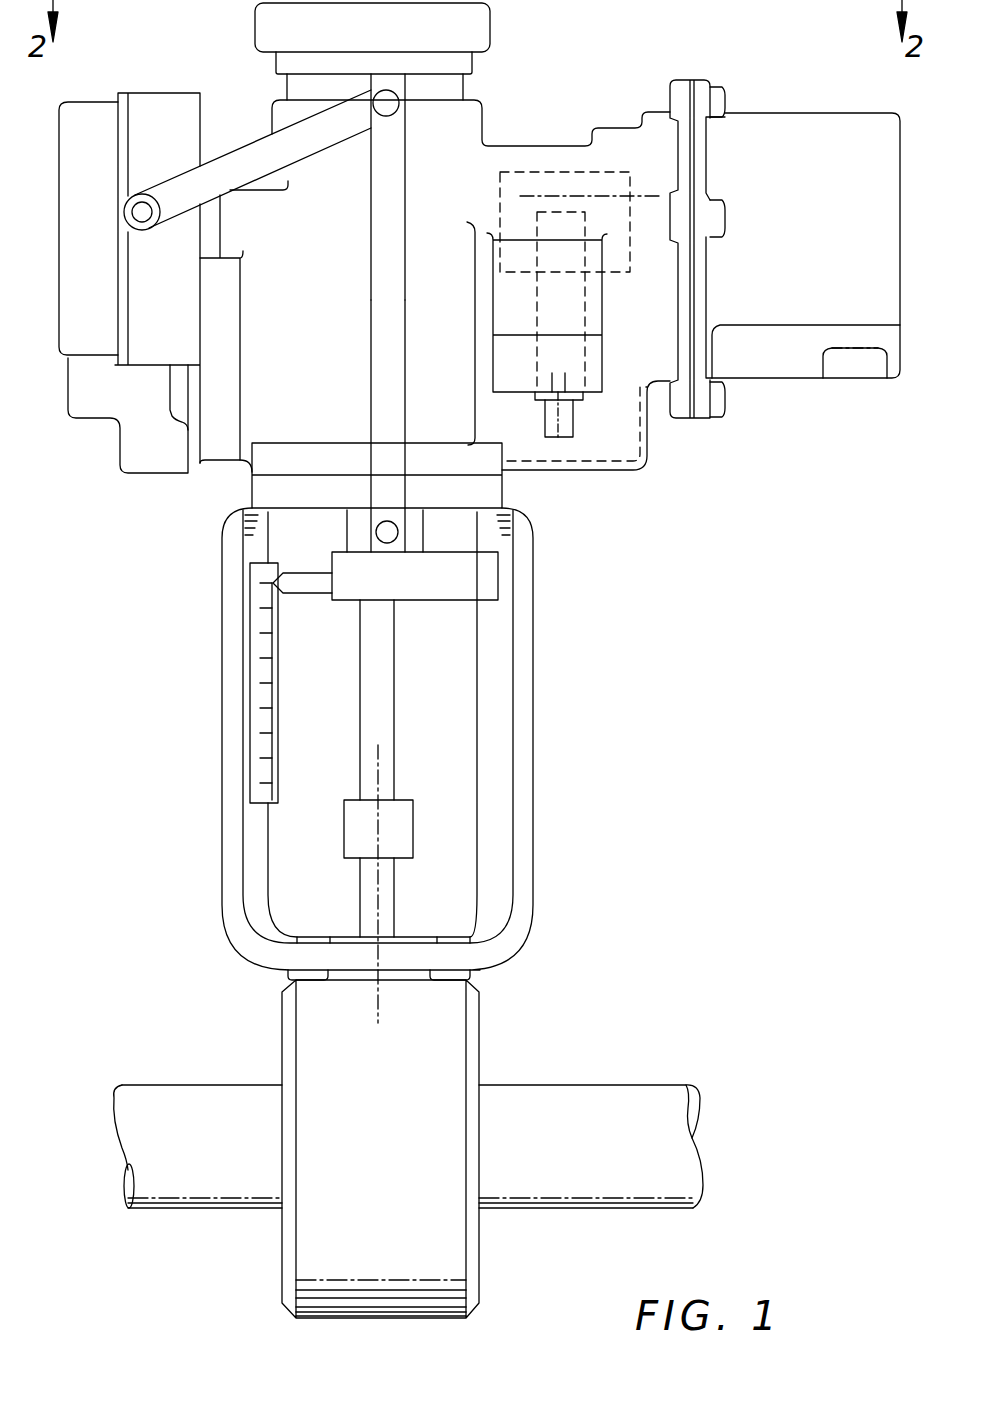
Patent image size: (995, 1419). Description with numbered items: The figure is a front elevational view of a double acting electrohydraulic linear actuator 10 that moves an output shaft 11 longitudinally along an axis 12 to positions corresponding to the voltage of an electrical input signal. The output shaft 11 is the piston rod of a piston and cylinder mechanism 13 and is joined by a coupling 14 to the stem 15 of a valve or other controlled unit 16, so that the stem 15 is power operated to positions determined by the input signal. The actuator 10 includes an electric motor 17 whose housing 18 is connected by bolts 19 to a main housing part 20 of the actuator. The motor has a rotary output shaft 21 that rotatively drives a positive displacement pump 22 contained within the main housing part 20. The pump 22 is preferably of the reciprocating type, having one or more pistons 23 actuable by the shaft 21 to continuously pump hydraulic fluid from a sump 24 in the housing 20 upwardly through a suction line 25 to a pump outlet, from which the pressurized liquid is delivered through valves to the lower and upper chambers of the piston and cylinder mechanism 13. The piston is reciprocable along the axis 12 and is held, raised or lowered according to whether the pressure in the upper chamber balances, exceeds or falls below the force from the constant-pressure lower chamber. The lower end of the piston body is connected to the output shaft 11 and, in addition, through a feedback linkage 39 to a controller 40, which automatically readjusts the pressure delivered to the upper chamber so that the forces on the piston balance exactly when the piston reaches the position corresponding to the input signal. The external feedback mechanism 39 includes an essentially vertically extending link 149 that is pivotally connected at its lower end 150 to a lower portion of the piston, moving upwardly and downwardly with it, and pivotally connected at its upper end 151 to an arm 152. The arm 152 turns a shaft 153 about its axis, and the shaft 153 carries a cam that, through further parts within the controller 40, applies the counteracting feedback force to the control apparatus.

The electrohydraulic linear actuator 10 is at (645, 585).
The output shaft 11 is at (397, 705).
The axis 12 is at (378, 998).
The piston and cylinder mechanism 13 is at (492, 119).
The coupling 14 is at (344, 837).
The stem 15 is at (398, 895).
The controlled unit 16 is at (480, 1062).
The electric motor 17 is at (802, 386).
The motor housing 18 is at (823, 113).
The bolts 19 is at (726, 101).
The main housing part 20 is at (267, 412).
The rotary output shaft 21 is at (632, 196).
The positive displacement pump 22 is at (507, 273).
The pistons 23 is at (543, 400).
The sump 24 is at (623, 456).
The suction line 25 is at (565, 420).
The feedback linkage 39 is at (366, 260).
The controller 40 is at (197, 60).
The link 149 is at (400, 192).
The lower end of link 150 is at (383, 500).
The upper end of link 151 is at (398, 126).
The arm 152 is at (313, 148).
The shaft 153 is at (136, 212).